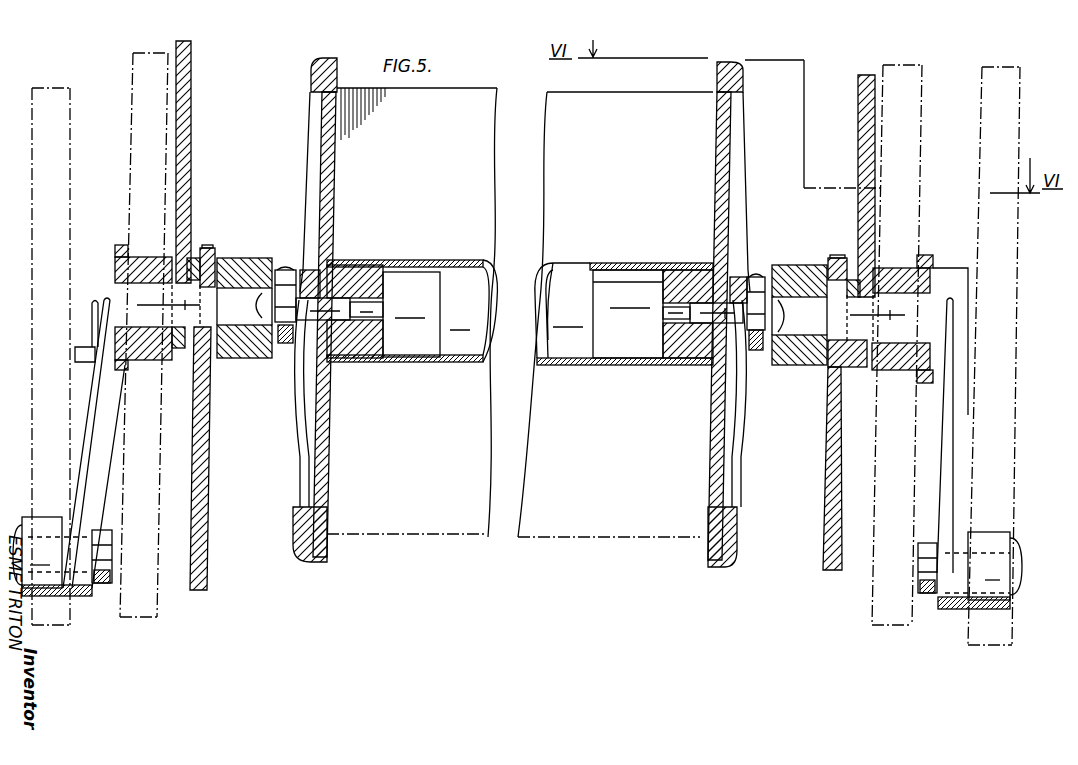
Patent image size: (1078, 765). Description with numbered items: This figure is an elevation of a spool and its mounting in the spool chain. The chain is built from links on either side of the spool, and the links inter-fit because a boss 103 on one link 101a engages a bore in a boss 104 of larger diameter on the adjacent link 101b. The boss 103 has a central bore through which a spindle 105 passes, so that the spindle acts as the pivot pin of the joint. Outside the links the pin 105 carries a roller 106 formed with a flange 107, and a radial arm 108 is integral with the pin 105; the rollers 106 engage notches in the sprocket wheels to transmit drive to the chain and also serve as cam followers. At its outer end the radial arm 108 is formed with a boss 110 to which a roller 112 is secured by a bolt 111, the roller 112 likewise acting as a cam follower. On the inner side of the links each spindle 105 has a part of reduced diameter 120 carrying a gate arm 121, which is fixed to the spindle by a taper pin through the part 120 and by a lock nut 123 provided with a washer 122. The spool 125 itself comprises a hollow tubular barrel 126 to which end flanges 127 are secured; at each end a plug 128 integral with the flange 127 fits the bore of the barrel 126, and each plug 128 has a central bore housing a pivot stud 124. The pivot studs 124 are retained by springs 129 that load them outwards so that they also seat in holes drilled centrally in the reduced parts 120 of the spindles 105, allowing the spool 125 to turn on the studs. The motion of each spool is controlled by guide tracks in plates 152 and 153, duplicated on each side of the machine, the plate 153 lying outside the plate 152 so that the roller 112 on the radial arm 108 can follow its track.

The link 101a is at (183, 134).
The adjacent link 101b is at (200, 478).
The boss 103 is at (192, 257).
The boss 104 is at (207, 250).
The spindle 105 is at (152, 313).
The roller 106 is at (137, 363).
The flange 107 is at (118, 246).
The radial arm 108 is at (77, 412).
The boss 110 is at (942, 596).
The bolt 111 is at (925, 587).
The roller 112 is at (42, 530).
The part of reduced diameter 120 is at (245, 262).
The gate arm 121 is at (258, 345).
The washer 122 is at (278, 268).
The lock nut 123 is at (302, 272).
The pivot stud 124 is at (325, 317).
The spool 125 is at (543, 537).
The hollow tubular barrel 126 is at (633, 370).
The end flange 127 is at (325, 62).
The plug 128 is at (683, 343).
The spring 129 is at (293, 410).
The plate 152 is at (145, 184).
The plate 153 is at (72, 130).